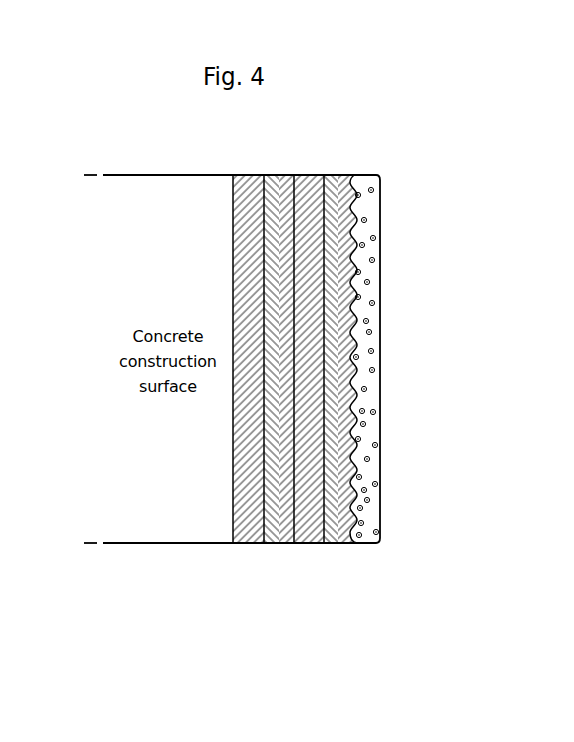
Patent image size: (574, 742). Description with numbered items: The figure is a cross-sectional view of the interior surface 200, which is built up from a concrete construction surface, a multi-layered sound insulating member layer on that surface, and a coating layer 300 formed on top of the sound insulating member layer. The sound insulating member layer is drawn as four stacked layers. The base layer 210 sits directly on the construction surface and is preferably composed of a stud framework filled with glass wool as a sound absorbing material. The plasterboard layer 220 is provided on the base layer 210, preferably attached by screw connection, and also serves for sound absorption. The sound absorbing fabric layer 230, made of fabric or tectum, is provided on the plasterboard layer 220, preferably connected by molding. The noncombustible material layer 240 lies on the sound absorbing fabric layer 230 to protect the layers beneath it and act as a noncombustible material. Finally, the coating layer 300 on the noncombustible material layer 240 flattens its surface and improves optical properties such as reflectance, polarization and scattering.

The interior surface 200 is at (103, 168).
The base layer 210 is at (248, 541).
The plasterboard layer 220 is at (284, 540).
The sound absorbing fabric layer 230 is at (307, 540).
The noncombustible material layer 240 is at (345, 541).
The coating layer 300 is at (375, 209).